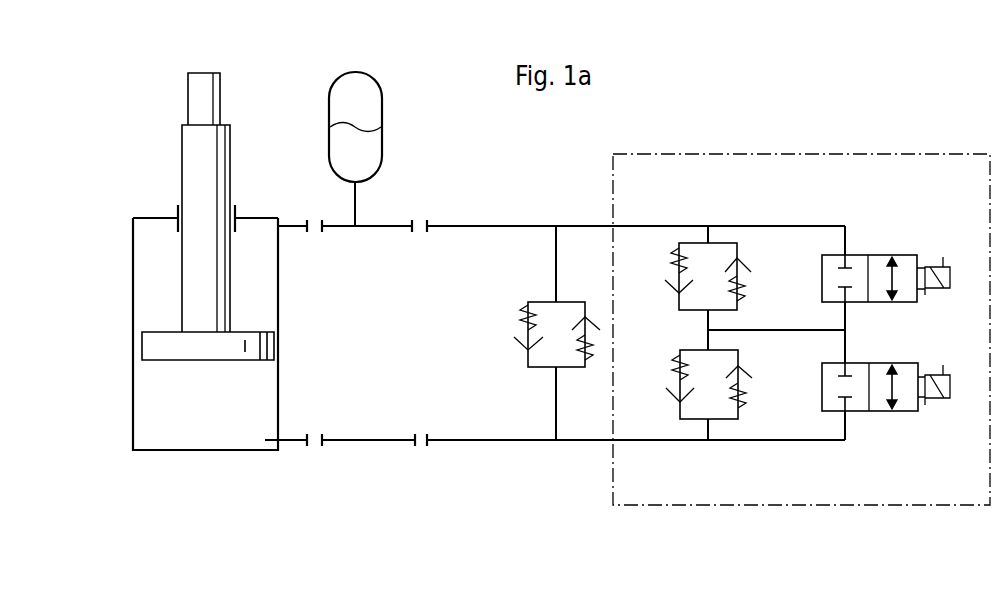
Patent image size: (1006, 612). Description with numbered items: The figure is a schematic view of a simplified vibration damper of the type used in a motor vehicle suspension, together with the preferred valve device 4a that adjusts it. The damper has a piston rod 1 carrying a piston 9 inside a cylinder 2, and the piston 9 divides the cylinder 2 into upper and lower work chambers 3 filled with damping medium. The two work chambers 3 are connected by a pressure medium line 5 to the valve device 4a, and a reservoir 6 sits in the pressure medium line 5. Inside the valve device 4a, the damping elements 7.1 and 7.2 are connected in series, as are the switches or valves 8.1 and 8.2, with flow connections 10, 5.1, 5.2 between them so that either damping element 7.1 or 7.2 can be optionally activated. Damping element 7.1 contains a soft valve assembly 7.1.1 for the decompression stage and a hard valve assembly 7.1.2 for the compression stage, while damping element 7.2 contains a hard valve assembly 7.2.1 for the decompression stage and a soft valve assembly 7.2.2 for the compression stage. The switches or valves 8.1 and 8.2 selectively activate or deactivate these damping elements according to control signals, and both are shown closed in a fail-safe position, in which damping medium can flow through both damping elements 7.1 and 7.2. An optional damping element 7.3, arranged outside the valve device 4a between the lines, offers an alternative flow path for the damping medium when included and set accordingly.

The piston rod 1 is at (214, 176).
The cylinder 2 is at (278, 284).
The work chambers 3 is at (147, 283).
The valve device 4a is at (612, 200).
The pressure medium line 5 is at (437, 225).
The flow connection 5.1 is at (705, 328).
The flow connection 5.2 is at (843, 345).
The reservoir 6 is at (337, 148).
The damping element 7.1 is at (718, 286).
The soft valve assembly 7.1.1 is at (740, 270).
The hard valve assembly 7.1.2 is at (676, 282).
The damping element 7.2 is at (713, 390).
The hard valve assembly 7.2.1 is at (740, 380).
The soft valve assembly 7.2.2 is at (680, 390).
The damping element 7.3 is at (551, 320).
The switch or valve 8.1 is at (870, 255).
The switch or valve 8.2 is at (870, 363).
The piston 9 is at (255, 347).
The flow connection 10 is at (818, 329).